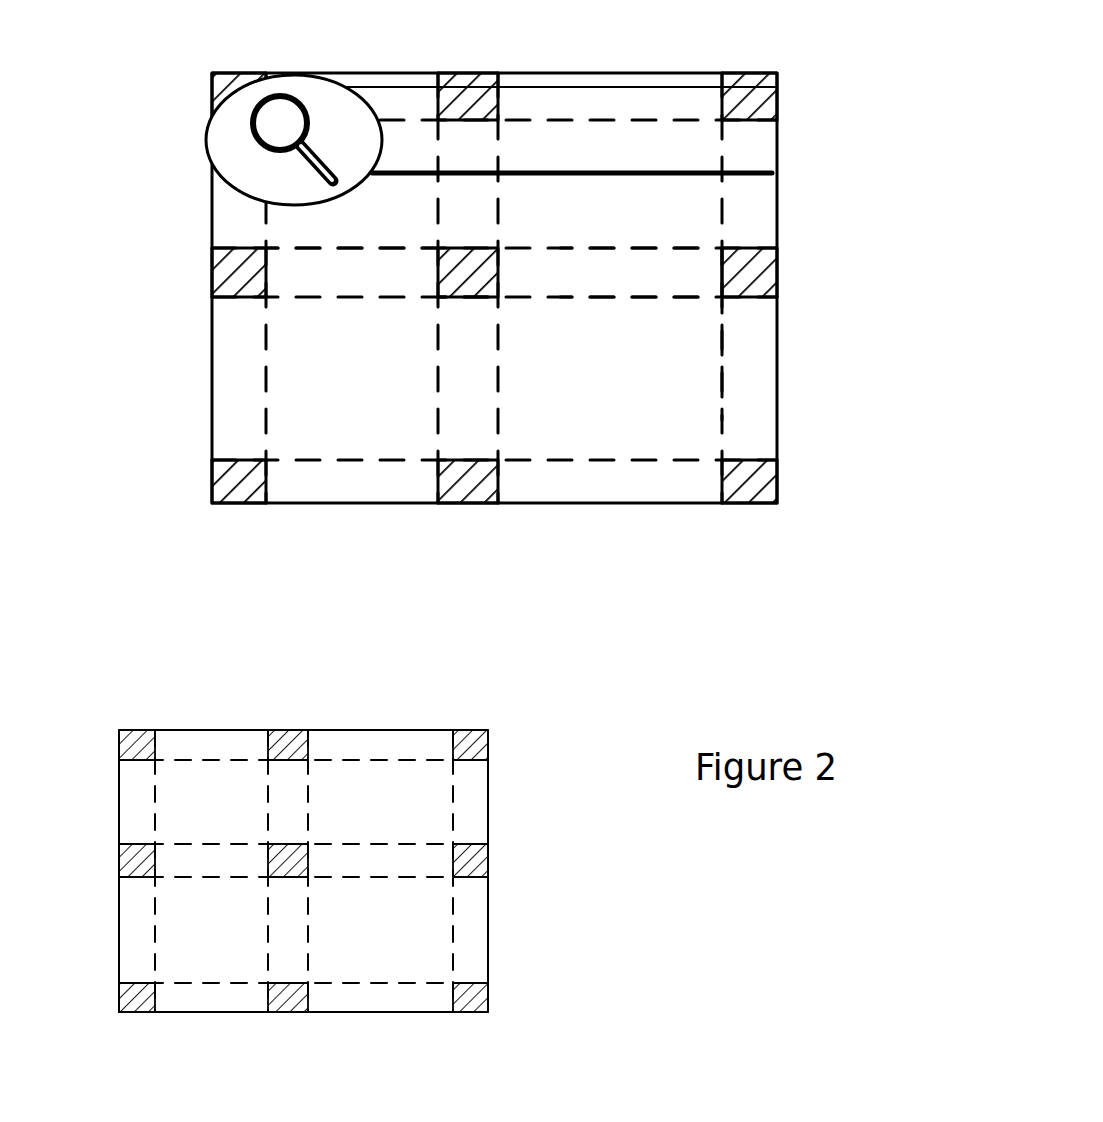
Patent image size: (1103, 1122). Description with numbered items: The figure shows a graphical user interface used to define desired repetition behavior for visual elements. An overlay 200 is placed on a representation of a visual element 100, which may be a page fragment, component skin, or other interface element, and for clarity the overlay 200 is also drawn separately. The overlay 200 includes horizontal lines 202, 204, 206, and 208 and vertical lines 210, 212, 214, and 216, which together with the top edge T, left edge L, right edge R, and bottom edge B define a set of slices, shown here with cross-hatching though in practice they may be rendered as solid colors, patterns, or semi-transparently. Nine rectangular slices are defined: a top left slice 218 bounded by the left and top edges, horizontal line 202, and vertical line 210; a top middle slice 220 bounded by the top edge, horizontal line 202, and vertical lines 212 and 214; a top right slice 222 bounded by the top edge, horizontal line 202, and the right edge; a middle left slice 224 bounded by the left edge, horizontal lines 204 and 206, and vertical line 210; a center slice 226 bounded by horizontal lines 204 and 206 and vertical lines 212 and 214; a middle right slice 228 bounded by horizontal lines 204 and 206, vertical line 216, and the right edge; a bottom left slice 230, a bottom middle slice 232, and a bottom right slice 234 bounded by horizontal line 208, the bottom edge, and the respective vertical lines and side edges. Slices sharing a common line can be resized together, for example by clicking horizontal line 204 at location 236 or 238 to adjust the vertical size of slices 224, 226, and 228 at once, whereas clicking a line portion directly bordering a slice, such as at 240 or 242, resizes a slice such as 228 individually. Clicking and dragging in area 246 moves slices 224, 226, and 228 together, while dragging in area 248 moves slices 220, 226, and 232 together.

The visual element 100 is at (620, 176).
The overlay 200 is at (562, 72).
The horizontal line 202 is at (210, 120).
The horizontal line 204 is at (210, 248).
The horizontal line 206 is at (212, 298).
The horizontal line 208 is at (212, 460).
The vertical line 210 is at (290, 482).
The vertical line 212 is at (440, 495).
The vertical line 214 is at (495, 487).
The vertical line 216 is at (720, 505).
The top left slice 218 is at (225, 72).
The top middle slice 220 is at (455, 72).
The top right slice 222 is at (745, 72).
The middle left slice 224 is at (210, 270).
The center slice 226 is at (505, 295).
The middle right slice 228 is at (772, 255).
The bottom left slice 230 is at (212, 490).
The bottom middle slice 232 is at (470, 505).
The bottom right slice 234 is at (746, 510).
The location 236 is at (612, 245).
The location 238 is at (618, 300).
The line portion 240 is at (742, 300).
The line portion 242 is at (718, 272).
The area 246 is at (354, 286).
The area 248 is at (481, 393).
The top edge T is at (378, 726).
The left edge L is at (113, 892).
The right edge R is at (490, 932).
The bottom edge B is at (352, 1012).